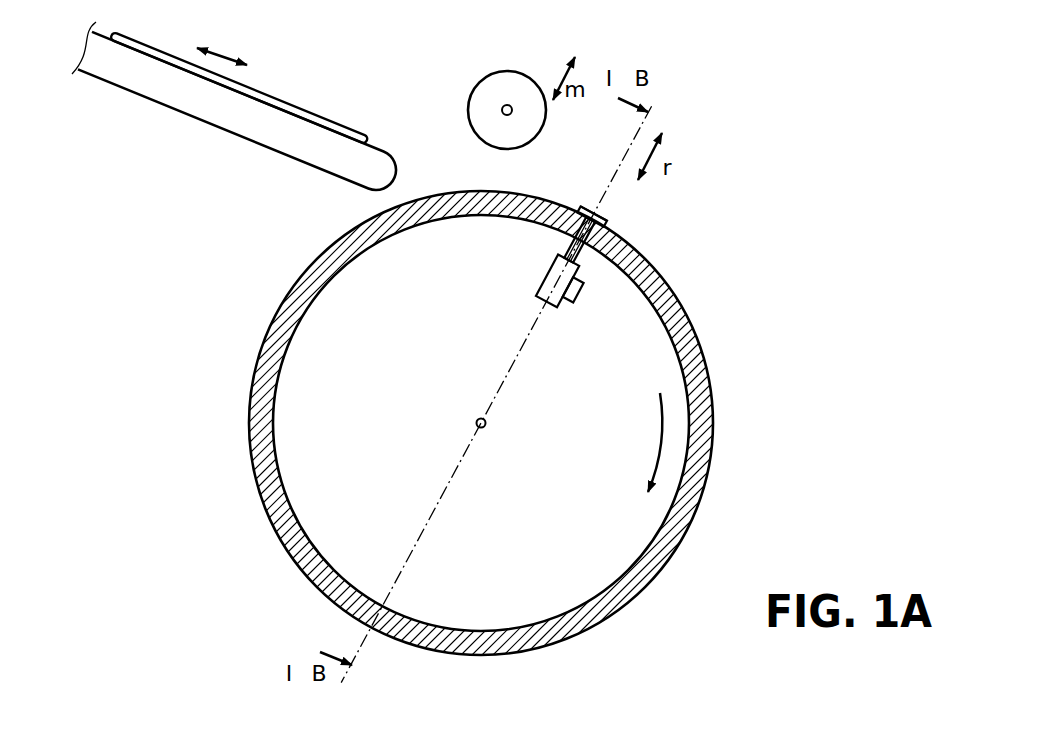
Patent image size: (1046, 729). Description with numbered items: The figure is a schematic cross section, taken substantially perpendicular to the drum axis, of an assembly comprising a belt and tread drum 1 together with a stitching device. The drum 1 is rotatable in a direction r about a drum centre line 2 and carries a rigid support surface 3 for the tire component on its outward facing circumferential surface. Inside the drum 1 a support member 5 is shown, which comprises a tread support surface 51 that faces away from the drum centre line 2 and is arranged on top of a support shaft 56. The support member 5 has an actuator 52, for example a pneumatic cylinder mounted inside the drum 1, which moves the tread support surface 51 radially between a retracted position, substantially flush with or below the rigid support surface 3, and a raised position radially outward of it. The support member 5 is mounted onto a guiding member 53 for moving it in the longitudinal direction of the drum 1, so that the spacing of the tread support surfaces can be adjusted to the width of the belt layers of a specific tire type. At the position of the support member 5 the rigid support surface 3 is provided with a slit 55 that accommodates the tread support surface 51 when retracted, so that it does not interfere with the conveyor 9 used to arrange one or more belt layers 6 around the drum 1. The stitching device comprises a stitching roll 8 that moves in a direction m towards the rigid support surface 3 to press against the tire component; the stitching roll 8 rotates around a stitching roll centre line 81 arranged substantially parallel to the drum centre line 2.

The belt and tread drum 1 is at (768, 281).
The drum centre line 2 is at (484, 426).
The rigid support surface 3 is at (717, 390).
The support member 5 is at (587, 266).
The tread support surface 51 is at (607, 216).
The actuator 52 is at (548, 272).
The guiding member 53 is at (577, 297).
The slit 55 is at (585, 206).
The support shaft 56 is at (568, 246).
The belt layer 6 is at (283, 107).
The stitching roll 8 is at (512, 87).
The stitching roll centre line 81 is at (500, 110).
The conveyor 9 is at (273, 143).